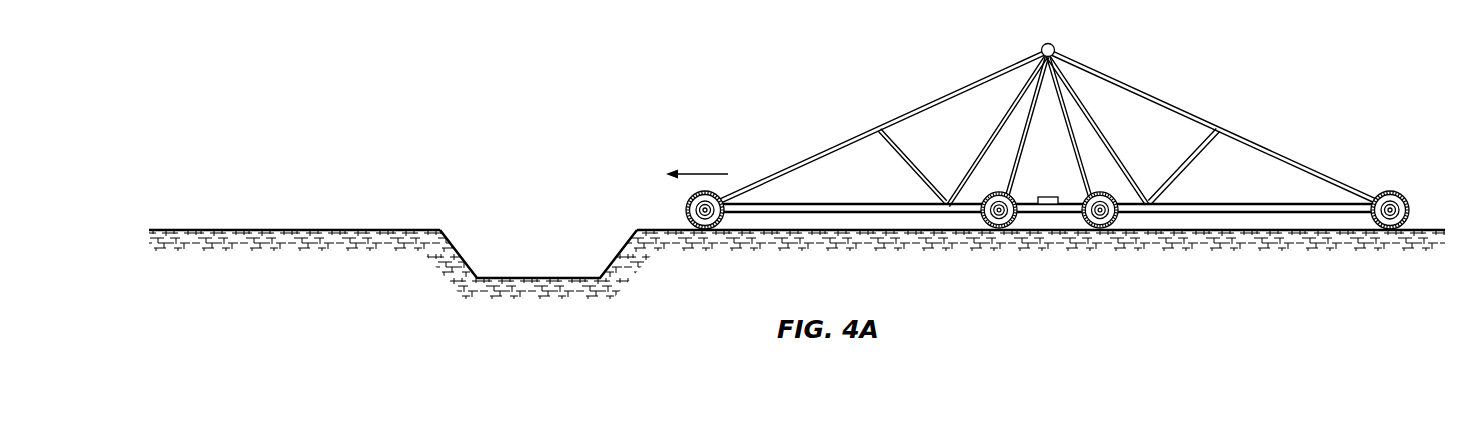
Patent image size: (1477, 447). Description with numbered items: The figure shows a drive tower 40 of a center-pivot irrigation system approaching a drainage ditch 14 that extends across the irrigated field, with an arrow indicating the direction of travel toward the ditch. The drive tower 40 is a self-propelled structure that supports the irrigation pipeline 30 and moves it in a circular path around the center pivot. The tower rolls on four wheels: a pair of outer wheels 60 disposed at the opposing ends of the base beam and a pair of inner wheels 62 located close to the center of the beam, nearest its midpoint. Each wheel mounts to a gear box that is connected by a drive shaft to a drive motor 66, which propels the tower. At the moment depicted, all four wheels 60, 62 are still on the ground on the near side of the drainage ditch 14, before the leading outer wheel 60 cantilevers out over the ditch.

The drainage ditch 14 is at (535, 279).
The irrigation pipeline 30 is at (1054, 45).
The drive tower 40 is at (1252, 92).
The outer wheels 60 is at (700, 228).
The inner wheels 62 is at (995, 228).
The drive motor 66 is at (1050, 197).